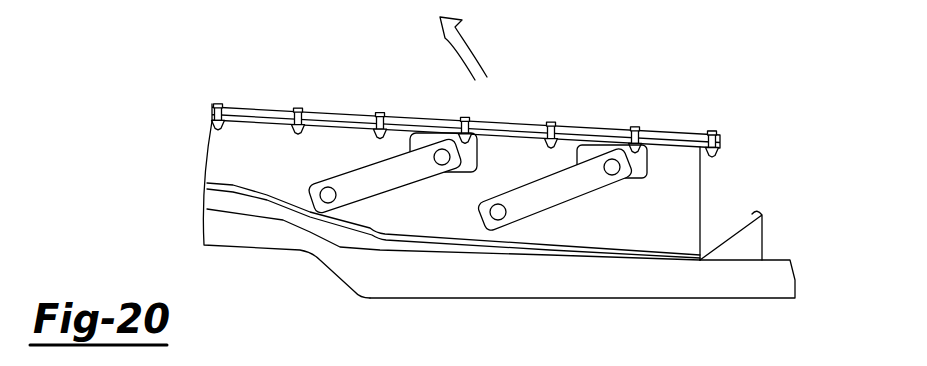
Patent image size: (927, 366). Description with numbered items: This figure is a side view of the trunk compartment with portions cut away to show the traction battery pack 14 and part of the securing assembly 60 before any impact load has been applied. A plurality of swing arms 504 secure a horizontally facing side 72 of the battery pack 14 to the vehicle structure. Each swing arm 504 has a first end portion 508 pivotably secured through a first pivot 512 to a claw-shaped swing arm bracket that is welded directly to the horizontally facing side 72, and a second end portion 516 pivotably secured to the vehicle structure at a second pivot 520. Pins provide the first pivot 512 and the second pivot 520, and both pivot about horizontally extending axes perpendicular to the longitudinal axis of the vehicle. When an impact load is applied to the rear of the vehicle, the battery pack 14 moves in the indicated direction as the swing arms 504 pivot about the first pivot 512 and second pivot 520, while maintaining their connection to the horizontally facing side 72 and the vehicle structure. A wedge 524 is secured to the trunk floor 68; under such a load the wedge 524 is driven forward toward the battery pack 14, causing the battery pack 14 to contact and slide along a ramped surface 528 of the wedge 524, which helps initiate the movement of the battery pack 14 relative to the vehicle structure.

The vehicle seat assembly 60 is at (542, 181).
The battery pack 14 is at (683, 160).
The horizontally facing side 72 is at (687, 175).
The trunk floor 68 is at (618, 257).
The swing arm 504 is at (573, 167).
The first end portion 508 is at (603, 190).
The first pivot 512 is at (612, 163).
The second end portion 516 is at (472, 272).
The second pivot 520 is at (490, 213).
The wedge 524 is at (763, 252).
The ramped surface 528 is at (757, 212).